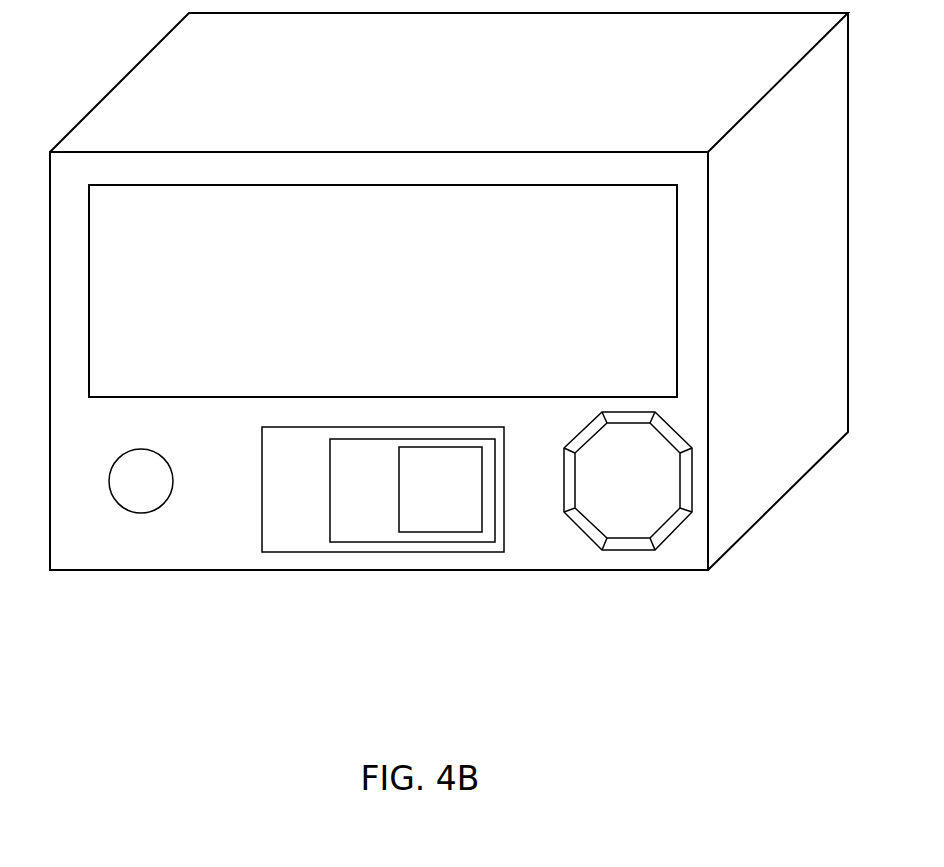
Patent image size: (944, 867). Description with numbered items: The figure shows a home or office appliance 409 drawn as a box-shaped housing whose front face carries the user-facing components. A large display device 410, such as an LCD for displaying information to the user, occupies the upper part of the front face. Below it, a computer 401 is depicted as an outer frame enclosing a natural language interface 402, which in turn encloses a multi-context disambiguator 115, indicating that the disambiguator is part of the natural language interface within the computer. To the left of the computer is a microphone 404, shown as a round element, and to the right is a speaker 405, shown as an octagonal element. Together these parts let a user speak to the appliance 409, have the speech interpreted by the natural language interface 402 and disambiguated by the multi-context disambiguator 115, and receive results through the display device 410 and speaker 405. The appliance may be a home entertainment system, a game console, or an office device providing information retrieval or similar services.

The appliance 409 is at (419, 574).
The display device 410 is at (358, 298).
The microphone 404 is at (119, 494).
The computer 401 is at (277, 496).
The natural language interface 402 is at (341, 496).
The multi-context disambiguator 115 is at (419, 501).
The speaker 405 is at (606, 493).